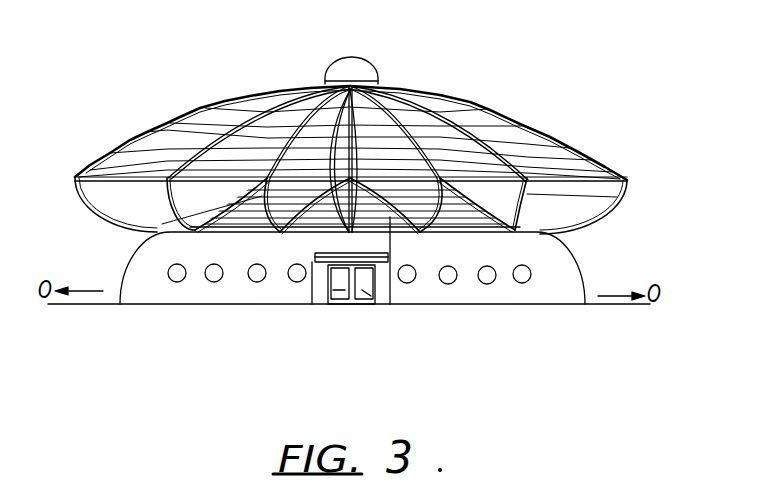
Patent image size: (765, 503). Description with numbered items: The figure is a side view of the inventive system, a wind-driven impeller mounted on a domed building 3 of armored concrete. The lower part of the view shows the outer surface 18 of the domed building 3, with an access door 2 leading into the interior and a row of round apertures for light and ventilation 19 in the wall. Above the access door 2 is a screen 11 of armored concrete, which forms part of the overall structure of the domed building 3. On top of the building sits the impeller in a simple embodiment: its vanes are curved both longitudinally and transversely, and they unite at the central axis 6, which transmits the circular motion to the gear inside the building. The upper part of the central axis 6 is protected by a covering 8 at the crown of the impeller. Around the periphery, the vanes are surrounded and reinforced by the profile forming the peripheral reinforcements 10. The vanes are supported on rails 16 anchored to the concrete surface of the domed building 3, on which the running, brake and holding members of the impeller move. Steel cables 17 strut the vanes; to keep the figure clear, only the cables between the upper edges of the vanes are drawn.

The access door 2 is at (369, 305).
The domed building 3 is at (560, 279).
The central axis 6 is at (358, 126).
The covering 8 is at (350, 70).
The peripheral reinforcement profile 10 is at (618, 203).
The screen 11 is at (312, 304).
The rail 16 is at (417, 232).
The steel cable 17 is at (180, 150).
The outer surface 18 is at (235, 282).
The apertures for light and ventilation 19 is at (487, 275).